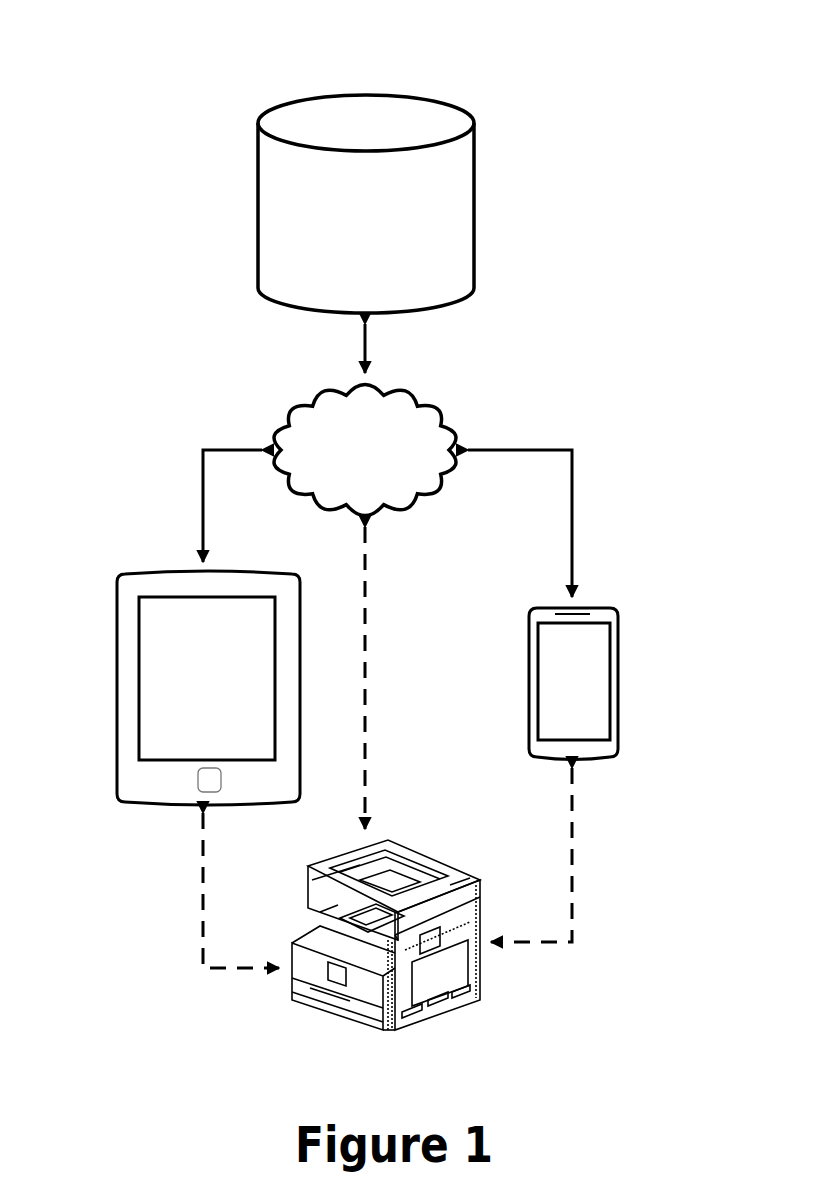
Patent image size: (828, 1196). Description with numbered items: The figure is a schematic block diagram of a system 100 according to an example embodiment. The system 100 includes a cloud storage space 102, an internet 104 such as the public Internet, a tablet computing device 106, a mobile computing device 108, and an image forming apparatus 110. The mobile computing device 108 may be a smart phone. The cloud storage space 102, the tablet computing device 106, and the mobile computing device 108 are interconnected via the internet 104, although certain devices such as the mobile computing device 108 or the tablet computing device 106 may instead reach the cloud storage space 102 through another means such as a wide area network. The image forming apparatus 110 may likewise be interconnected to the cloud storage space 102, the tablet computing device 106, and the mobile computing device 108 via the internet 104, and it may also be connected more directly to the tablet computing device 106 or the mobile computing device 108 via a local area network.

The system 100 is at (149, 50).
The cloud storage space 102 is at (487, 242).
The internet 104 is at (317, 382).
The tablet computing device 106 is at (110, 693).
The mobile computing device 108 is at (630, 735).
The image forming apparatus 110 is at (388, 1042).